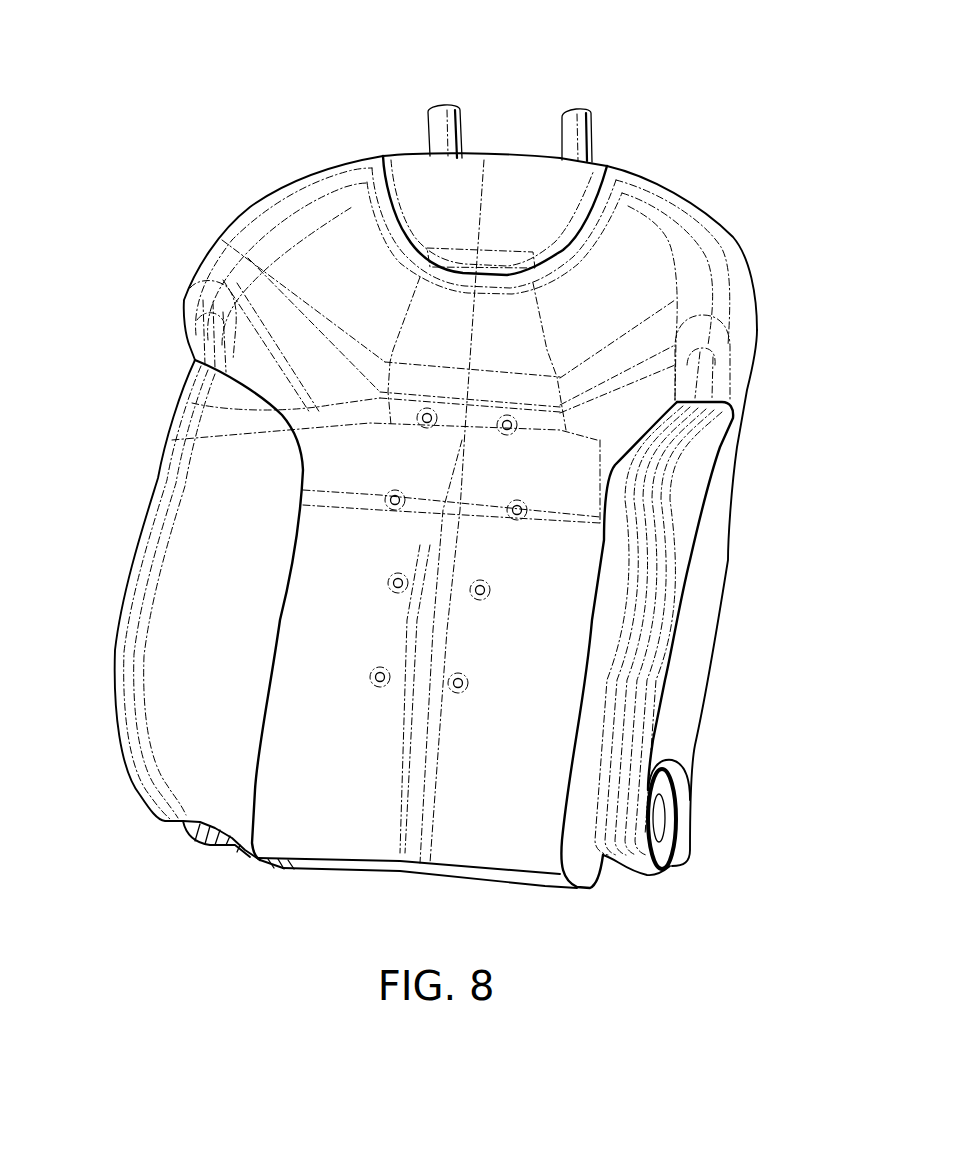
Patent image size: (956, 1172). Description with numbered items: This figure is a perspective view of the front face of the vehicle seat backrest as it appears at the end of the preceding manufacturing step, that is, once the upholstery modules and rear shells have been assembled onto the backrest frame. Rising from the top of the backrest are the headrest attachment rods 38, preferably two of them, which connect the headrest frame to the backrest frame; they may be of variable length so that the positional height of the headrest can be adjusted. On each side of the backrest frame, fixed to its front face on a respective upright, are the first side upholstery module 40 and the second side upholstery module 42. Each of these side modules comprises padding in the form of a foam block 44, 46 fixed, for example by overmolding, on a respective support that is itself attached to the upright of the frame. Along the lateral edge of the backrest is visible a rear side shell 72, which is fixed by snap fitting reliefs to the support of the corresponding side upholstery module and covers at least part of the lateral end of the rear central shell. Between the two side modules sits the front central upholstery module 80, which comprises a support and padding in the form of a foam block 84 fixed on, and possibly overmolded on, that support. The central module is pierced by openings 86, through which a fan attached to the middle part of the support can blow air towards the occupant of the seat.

The headrest attachment rod 38 is at (570, 150).
The first side upholstery module 40 is at (212, 638).
The second side upholstery module 42 is at (663, 492).
The foam block 44 is at (202, 697).
The foam block 46 is at (683, 531).
The rear side shell 72 is at (690, 613).
The front central upholstery module 80 is at (310, 808).
The foam block 84 is at (398, 832).
The openings 86 is at (370, 668).